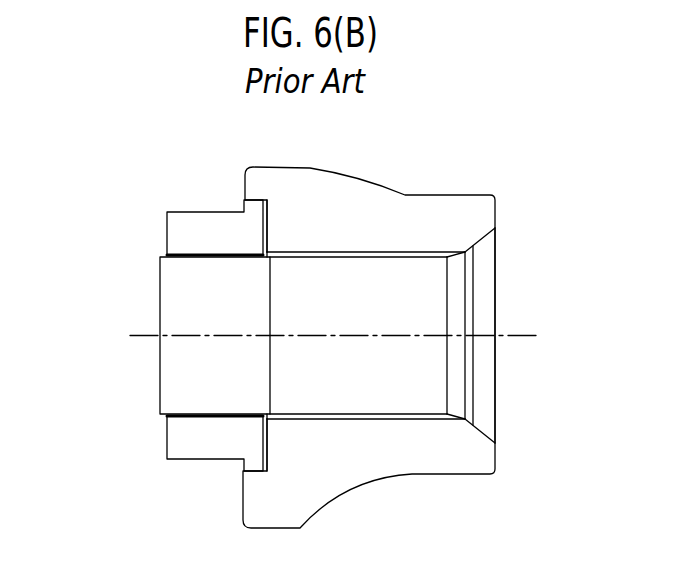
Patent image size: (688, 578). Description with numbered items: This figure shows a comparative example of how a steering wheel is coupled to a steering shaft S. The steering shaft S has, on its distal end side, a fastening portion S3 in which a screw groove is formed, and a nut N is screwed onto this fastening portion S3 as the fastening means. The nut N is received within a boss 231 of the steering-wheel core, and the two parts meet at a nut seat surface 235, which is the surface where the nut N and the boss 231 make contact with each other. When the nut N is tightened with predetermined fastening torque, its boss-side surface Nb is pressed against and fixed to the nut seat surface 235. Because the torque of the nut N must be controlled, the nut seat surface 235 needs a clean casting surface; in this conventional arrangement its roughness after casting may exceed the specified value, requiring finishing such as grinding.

The boss 231 is at (363, 208).
The nut N is at (193, 222).
The boss-side surface Nb is at (268, 237).
The nut seat surface 235 is at (267, 221).
The fastening portion S3 is at (187, 297).
The steering shaft S is at (495, 298).